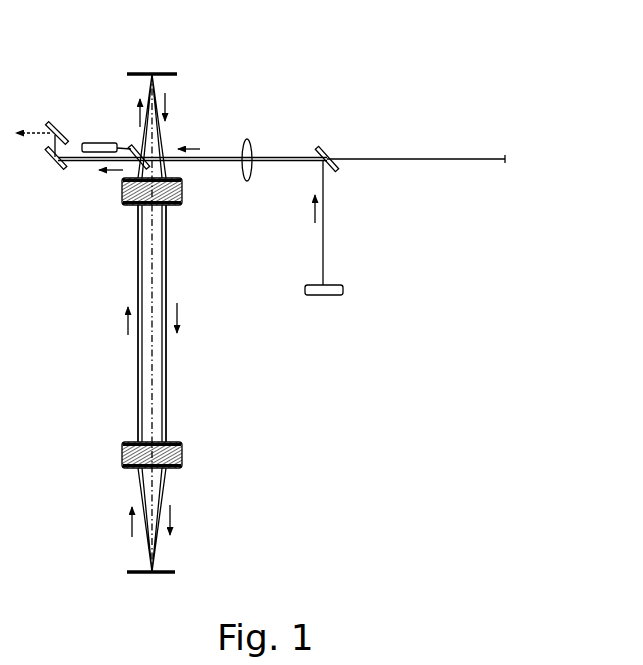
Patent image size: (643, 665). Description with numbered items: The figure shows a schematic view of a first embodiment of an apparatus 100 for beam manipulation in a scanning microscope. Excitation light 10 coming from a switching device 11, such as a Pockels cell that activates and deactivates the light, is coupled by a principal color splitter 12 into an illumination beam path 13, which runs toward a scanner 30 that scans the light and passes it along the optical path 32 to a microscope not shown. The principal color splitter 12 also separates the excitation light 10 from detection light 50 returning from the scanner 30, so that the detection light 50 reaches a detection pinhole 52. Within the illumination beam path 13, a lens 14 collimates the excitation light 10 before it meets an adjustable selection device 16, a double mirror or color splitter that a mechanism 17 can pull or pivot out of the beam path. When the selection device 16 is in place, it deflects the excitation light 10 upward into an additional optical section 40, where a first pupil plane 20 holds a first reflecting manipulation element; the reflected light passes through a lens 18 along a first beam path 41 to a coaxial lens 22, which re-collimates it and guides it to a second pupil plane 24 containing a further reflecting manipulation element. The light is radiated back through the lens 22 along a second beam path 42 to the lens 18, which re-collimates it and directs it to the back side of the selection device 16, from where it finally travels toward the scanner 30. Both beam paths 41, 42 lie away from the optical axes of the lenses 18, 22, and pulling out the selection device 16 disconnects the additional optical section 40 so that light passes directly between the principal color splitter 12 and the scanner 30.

The apparatus 100 is at (98, 358).
The excitation light 10 is at (324, 253).
The switching device 11 is at (333, 295).
The principal color splitter 12 is at (322, 147).
The illumination beam path 13 is at (200, 148).
The lens 14 is at (248, 141).
The selection device 16 is at (133, 144).
The mechanism 17 is at (90, 143).
The lens 18 is at (171, 206).
The first pupil plane 20 is at (172, 73).
The lens 22 is at (183, 462).
The second pupil plane 24 is at (175, 573).
The scanner 30 is at (44, 146).
The optical path to the microscope 32 is at (32, 130).
The additional optical section 40 is at (125, 88).
The first beam path 41 is at (167, 290).
The second beam path 42 is at (137, 242).
The detection light 50 is at (452, 160).
The detection pinhole 52 is at (505, 159).